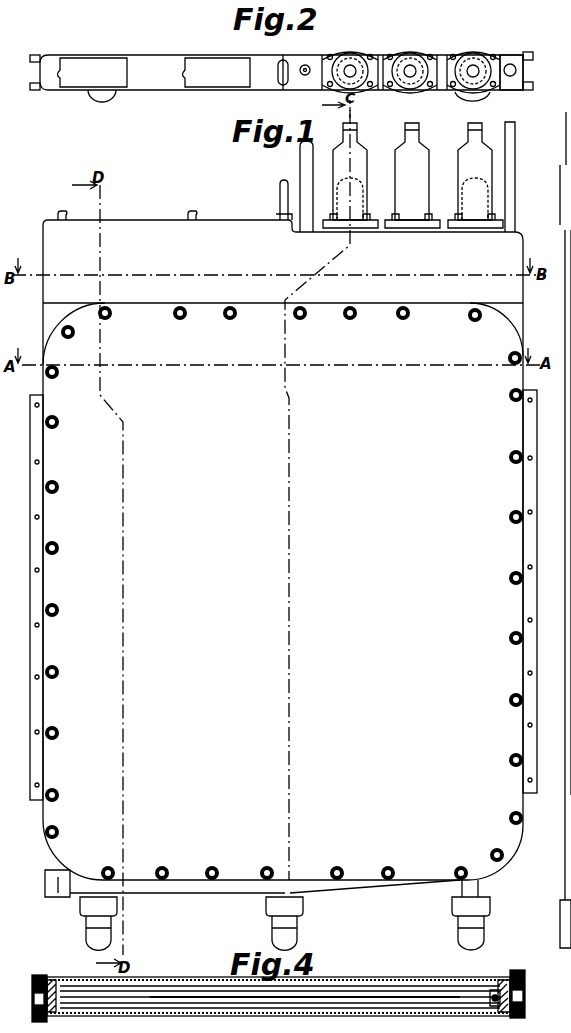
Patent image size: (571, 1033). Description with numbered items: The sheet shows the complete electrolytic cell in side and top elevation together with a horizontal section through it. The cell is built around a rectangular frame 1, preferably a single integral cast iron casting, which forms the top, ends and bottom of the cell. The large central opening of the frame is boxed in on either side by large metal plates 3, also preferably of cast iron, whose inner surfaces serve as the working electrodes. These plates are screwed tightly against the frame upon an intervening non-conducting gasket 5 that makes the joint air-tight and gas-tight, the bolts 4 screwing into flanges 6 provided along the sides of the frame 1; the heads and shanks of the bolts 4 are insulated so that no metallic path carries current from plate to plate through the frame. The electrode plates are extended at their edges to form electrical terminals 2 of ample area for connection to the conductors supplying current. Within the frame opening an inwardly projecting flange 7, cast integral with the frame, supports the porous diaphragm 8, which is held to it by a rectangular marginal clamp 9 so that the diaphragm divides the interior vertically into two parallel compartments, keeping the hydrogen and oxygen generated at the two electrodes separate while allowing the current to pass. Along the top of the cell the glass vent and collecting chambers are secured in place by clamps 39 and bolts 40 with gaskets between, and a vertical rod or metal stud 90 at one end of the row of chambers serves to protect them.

In FIG. 4, the rectangular frame 1 is at (526, 995).
In FIG. 2, the electrical terminals 2 is at (30, 86).
In FIG. 1, the electrical terminals 2 is at (31, 532).
In FIG. 1, the metal plates 3 is at (283, 558).
In FIG. 4, the metal plates 3 is at (178, 982).
In FIG. 1, the bolts 4 is at (45, 833).
In FIG. 4, the bolts 4 is at (525, 1015).
In FIG. 4, the gasket 5 is at (60, 984).
In FIG. 4, the flanges 6 is at (32, 998).
In FIG. 4, the flange 7 is at (498, 990).
In FIG. 4, the diaphragm 8 is at (360, 1000).
In FIG. 4, the rectangular marginal clamp 9 is at (494, 1001).
In FIG. 2, the clamps 39 is at (460, 48).
In FIG. 2, the bolts 40 is at (490, 55).
In FIG. 1, the bolts 40 is at (563, 218).
In FIG. 2, the vertical rod or metal stud 90 is at (518, 66).